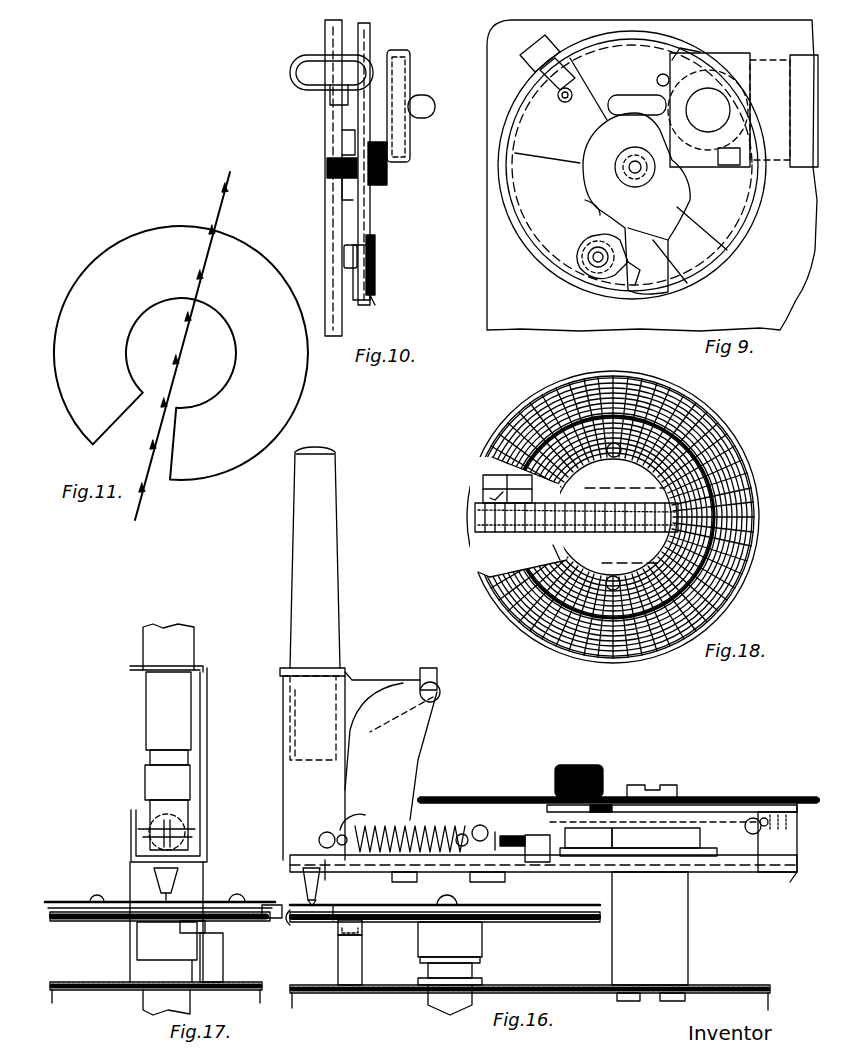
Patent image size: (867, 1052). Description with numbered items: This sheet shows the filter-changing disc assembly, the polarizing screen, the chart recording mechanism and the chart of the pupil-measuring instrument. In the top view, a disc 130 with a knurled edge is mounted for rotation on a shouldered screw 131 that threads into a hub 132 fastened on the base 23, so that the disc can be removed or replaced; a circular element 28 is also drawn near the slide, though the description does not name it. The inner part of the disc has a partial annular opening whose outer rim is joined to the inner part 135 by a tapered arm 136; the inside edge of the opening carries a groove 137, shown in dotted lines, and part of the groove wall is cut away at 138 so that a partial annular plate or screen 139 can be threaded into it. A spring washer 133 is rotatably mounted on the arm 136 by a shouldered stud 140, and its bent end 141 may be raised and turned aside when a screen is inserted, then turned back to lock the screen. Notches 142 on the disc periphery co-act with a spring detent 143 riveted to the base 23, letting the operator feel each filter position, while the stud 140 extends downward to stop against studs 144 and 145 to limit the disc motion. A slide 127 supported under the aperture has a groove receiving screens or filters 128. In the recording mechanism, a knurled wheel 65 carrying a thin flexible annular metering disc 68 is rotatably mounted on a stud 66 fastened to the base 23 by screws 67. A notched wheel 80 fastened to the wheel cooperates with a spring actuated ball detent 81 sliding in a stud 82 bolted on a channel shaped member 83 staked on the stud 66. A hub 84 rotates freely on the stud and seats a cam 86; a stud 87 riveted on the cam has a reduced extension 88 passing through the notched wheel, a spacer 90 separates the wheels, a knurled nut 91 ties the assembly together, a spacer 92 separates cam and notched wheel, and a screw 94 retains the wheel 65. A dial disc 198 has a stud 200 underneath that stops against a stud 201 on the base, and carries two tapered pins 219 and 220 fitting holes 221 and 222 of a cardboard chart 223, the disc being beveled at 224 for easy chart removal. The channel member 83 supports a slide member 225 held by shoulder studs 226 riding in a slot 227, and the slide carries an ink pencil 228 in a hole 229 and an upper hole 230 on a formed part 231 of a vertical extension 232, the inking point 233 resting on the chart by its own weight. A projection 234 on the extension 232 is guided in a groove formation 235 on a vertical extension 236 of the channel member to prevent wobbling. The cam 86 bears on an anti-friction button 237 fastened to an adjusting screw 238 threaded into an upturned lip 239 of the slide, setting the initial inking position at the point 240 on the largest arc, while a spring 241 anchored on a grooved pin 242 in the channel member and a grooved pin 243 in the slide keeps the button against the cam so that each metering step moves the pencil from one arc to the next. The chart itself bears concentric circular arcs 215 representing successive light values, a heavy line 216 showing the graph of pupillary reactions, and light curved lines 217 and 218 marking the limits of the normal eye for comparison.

In FIG. 10, the base 23 is at (341, 325).
In FIG. 9, the base 23 is at (487, 263).
In FIG. 17, the base 23 is at (60, 982).
In FIG. 16, the base 23 is at (545, 985).
In FIG. 9, the shaft 28 is at (743, 110).
In FIG. 16, the knurled wheel 65 is at (800, 808).
In FIG. 16, the stud 66 is at (688, 912).
In FIG. 16, the screws 67 is at (675, 1001).
In FIG. 16, the flexible annular disc 68 is at (762, 797).
In FIG. 16, the notched wheel 80 is at (715, 822).
In FIG. 16, the spring actuated ball detent 81 is at (748, 832).
In FIG. 16, the stud 82 is at (797, 850).
In FIG. 17, the channel shaped member 83 is at (205, 865).
In FIG. 16, the channel shaped member 83 is at (720, 872).
In FIG. 16, the hub 84 is at (690, 872).
In FIG. 16, the cam 86 is at (705, 845).
In FIG. 16, the stud 87 is at (595, 838).
In FIG. 16, the reduced extension 88 is at (575, 811).
In FIG. 16, the spacer 90 is at (595, 811).
In FIG. 16, the knurled nut 91 is at (603, 768).
In FIG. 16, the spacer 92 is at (656, 838).
In FIG. 16, the screw 94 is at (660, 785).
In FIG. 10, the slide 127 is at (411, 75).
In FIG. 9, the slide 127 is at (657, 80).
In FIG. 10, the screens or filters 128 is at (410, 138).
In FIG. 10, the disc 130 is at (370, 210).
In FIG. 9, the disc 130 is at (498, 128).
In FIG. 10, the shouldered screw 131 is at (388, 180).
In FIG. 9, the shouldered screw 131 is at (640, 182).
In FIG. 10, the hub 132 is at (352, 190).
In FIG. 9, the spring washer 133 is at (580, 260).
In FIG. 9, the inner part 135 is at (590, 180).
In FIG. 9, the tapered arm 136 is at (600, 222).
In FIG. 10, the groove 137 is at (375, 222).
In FIG. 9, the groove 137 is at (600, 140).
In FIG. 9, the cut away wall portion 138 is at (650, 235).
In FIG. 11, the partial annular plate or screen 139 is at (122, 252).
In FIG. 10, the shouldered stud 140 is at (350, 258).
In FIG. 9, the shouldered stud 140 is at (585, 262).
In FIG. 10, the bent end 141 is at (378, 292).
In FIG. 9, the bent end 141 is at (645, 268).
In FIG. 9, the notches 142 is at (500, 198).
In FIG. 10, the spring detent 143 is at (302, 58).
In FIG. 9, the spring detent 143 is at (530, 58).
In FIG. 10, the stud 144 is at (345, 145).
In FIG. 9, the stud 144 is at (725, 160).
In FIG. 10, the stud 145 is at (340, 103).
In FIG. 9, the stud 145 is at (660, 65).
In FIG. 17, the dial disc 198 is at (80, 921).
In FIG. 16, the dial disc 198 is at (515, 922).
In FIG. 17, the stud 200 is at (205, 928).
In FIG. 16, the stud 200 is at (338, 928).
In FIG. 17, the stop or stud 201 is at (223, 952).
In FIG. 16, the stop or stud 201 is at (338, 950).
In FIG. 18, the concentric circular arcs 215 is at (498, 575).
In FIG. 18, the heavy line graph 216 is at (745, 588).
In FIG. 18, the light curved line 217 is at (745, 545).
In FIG. 18, the light curved line 218 is at (735, 497).
In FIG. 17, the tapered pin 219 is at (93, 897).
In FIG. 17, the tapered pin 220 is at (236, 896).
In FIG. 16, the tapered pin 220 is at (457, 900).
In FIG. 18, the hole 221 is at (618, 457).
In FIG. 18, the hole 222 is at (612, 578).
In FIG. 18, the chart 223 is at (488, 592).
In FIG. 16, the chart 223 is at (340, 905).
In FIG. 16, the bevel 224 is at (288, 925).
In FIG. 17, the slide member 225 is at (140, 880).
In FIG. 16, the slide member 225 is at (326, 870).
In FIG. 16, the shoulder studs 226 is at (445, 887).
In FIG. 16, the slot 227 is at (505, 878).
In FIG. 17, the ink pencil 228 is at (143, 637).
In FIG. 16, the ink pencil 228 is at (290, 612).
In FIG. 16, the hole 229 is at (303, 872).
In FIG. 17, the hole 230 is at (152, 672).
In FIG. 16, the hole 230 is at (290, 668).
In FIG. 17, the formed part 231 is at (130, 669).
In FIG. 16, the formed part 231 is at (280, 675).
In FIG. 17, the vertical extension 232 is at (191, 782).
In FIG. 16, the vertical extension 232 is at (283, 748).
In FIG. 16, the inking point 233 is at (305, 902).
In FIG. 16, the projection 234 is at (375, 680).
In FIG. 17, the groove formation 235 is at (206, 690).
In FIG. 16, the groove formation 235 is at (440, 682).
In FIG. 16, the vertical extension 236 is at (420, 742).
In FIG. 16, the anti-friction button 237 is at (540, 862).
In FIG. 16, the adjusting screw 238 is at (520, 836).
In FIG. 16, the upturned lip 239 is at (505, 832).
In FIG. 18, the point 240 is at (478, 517).
In FIG. 16, the spring 241 is at (396, 828).
In FIG. 17, the grooved pin 242 is at (193, 830).
In FIG. 16, the grooved pin 242 is at (488, 812).
In FIG. 17, the grooved pin 243 is at (189, 822).
In FIG. 16, the grooved pin 243 is at (355, 815).